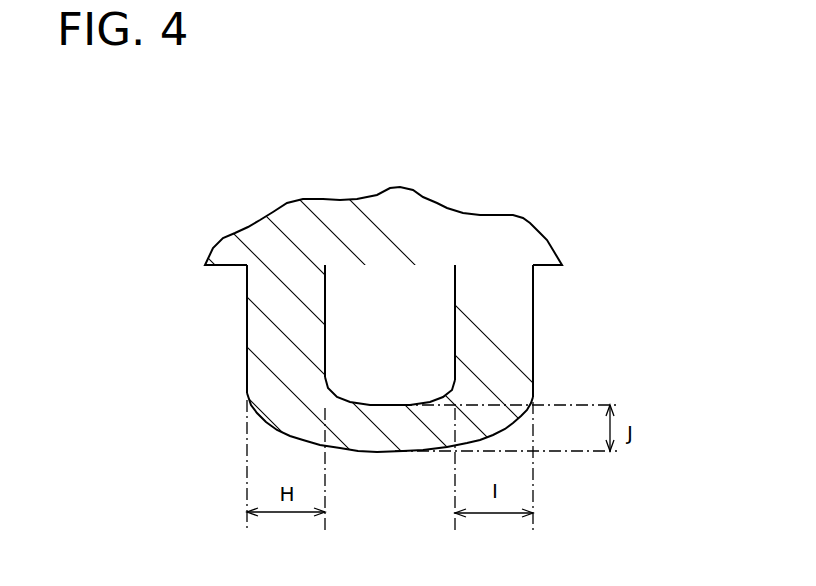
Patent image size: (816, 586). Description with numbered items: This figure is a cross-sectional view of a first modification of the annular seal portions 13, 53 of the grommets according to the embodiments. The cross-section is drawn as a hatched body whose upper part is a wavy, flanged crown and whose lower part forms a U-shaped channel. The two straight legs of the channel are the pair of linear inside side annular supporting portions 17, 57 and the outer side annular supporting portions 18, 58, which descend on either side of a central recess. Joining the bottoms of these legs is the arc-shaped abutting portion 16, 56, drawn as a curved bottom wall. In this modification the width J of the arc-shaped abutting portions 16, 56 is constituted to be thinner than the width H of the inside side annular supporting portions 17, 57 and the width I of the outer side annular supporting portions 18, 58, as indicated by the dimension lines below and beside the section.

The annular seal portion 13 is at (408, 346).
The annular seal portion 53 is at (465, 207).
The inside side annular supporting portion 17 is at (206, 329).
The inside side annular supporting portion 57 is at (237, 338).
The outer side annular supporting portion 18 is at (573, 331).
The outer side annular supporting portion 58 is at (543, 338).
The arc-shaped abutting portion 16 is at (390, 470).
The arc-shaped abutting portion 56 is at (378, 447).